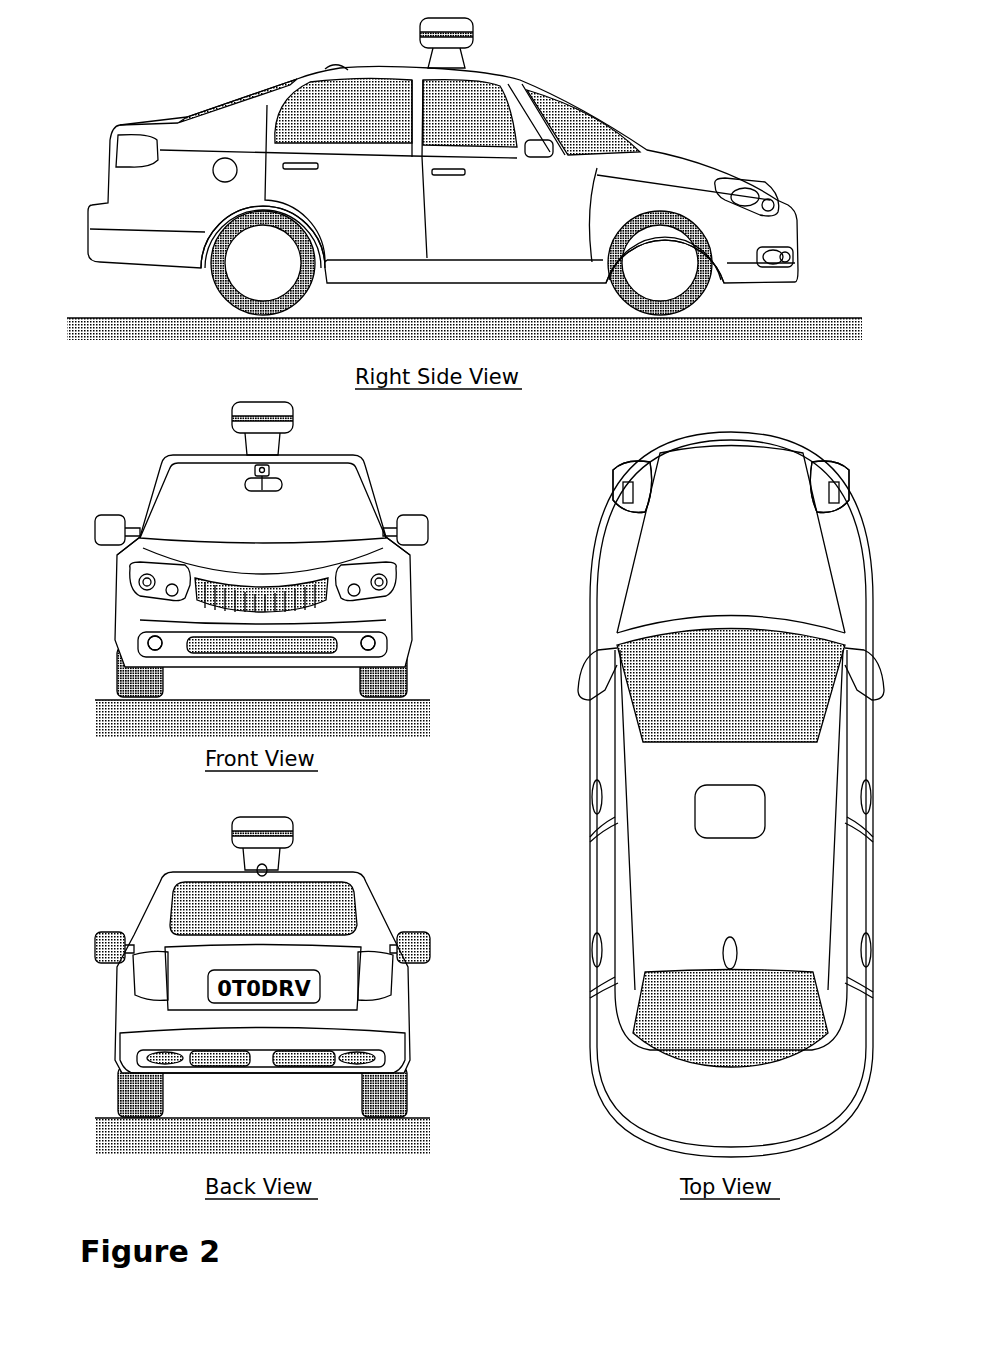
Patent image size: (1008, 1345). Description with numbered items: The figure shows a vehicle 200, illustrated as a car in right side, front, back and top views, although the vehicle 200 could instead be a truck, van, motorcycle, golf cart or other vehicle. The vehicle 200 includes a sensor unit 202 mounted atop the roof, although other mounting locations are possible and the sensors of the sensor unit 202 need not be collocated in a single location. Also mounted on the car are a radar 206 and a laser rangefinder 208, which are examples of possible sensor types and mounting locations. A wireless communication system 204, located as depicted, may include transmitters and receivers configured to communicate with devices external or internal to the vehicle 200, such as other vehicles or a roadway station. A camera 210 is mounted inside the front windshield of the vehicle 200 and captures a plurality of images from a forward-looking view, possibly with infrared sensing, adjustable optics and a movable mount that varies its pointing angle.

The vehicle 200 is at (78, 115).
The sensor unit 202 is at (477, 42).
The wireless communication system 204 is at (333, 63).
The radar 206 is at (794, 257).
The laser rangefinder 208 is at (781, 203).
The camera 210 is at (272, 470).